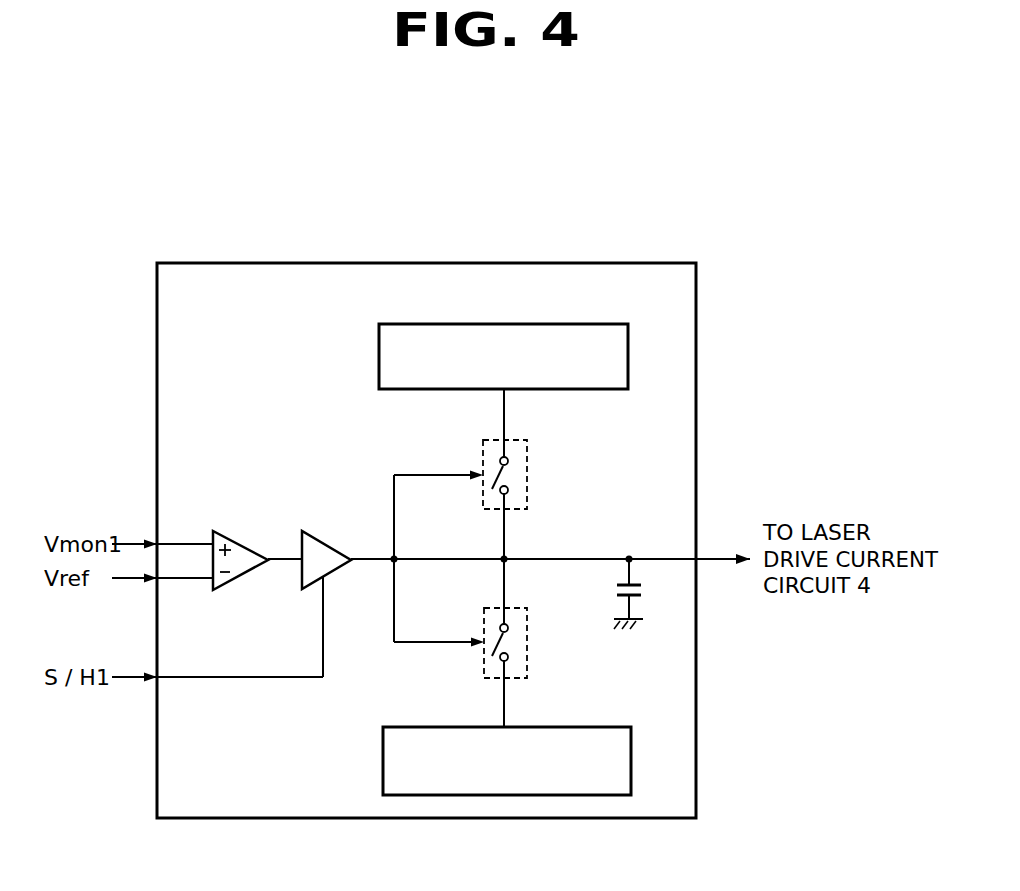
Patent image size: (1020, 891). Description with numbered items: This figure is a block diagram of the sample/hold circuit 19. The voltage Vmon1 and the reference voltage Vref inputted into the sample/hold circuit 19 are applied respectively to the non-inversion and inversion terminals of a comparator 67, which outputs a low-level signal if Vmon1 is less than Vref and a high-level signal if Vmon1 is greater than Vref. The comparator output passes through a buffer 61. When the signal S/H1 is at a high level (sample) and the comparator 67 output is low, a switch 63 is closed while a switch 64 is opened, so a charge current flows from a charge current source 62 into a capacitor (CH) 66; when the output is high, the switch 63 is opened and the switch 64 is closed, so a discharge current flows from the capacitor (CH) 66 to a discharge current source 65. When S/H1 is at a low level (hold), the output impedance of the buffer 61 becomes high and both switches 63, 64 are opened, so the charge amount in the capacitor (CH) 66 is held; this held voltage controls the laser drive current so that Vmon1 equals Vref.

The sample/hold circuit 19 is at (198, 263).
The buffer 61 is at (338, 550).
The charge current source 62 is at (604, 324).
The switch 63 is at (527, 475).
The switch 64 is at (527, 660).
The discharge current source 65 is at (607, 727).
The capacitor (CH) 66 is at (614, 589).
The comparator 67 is at (246, 547).